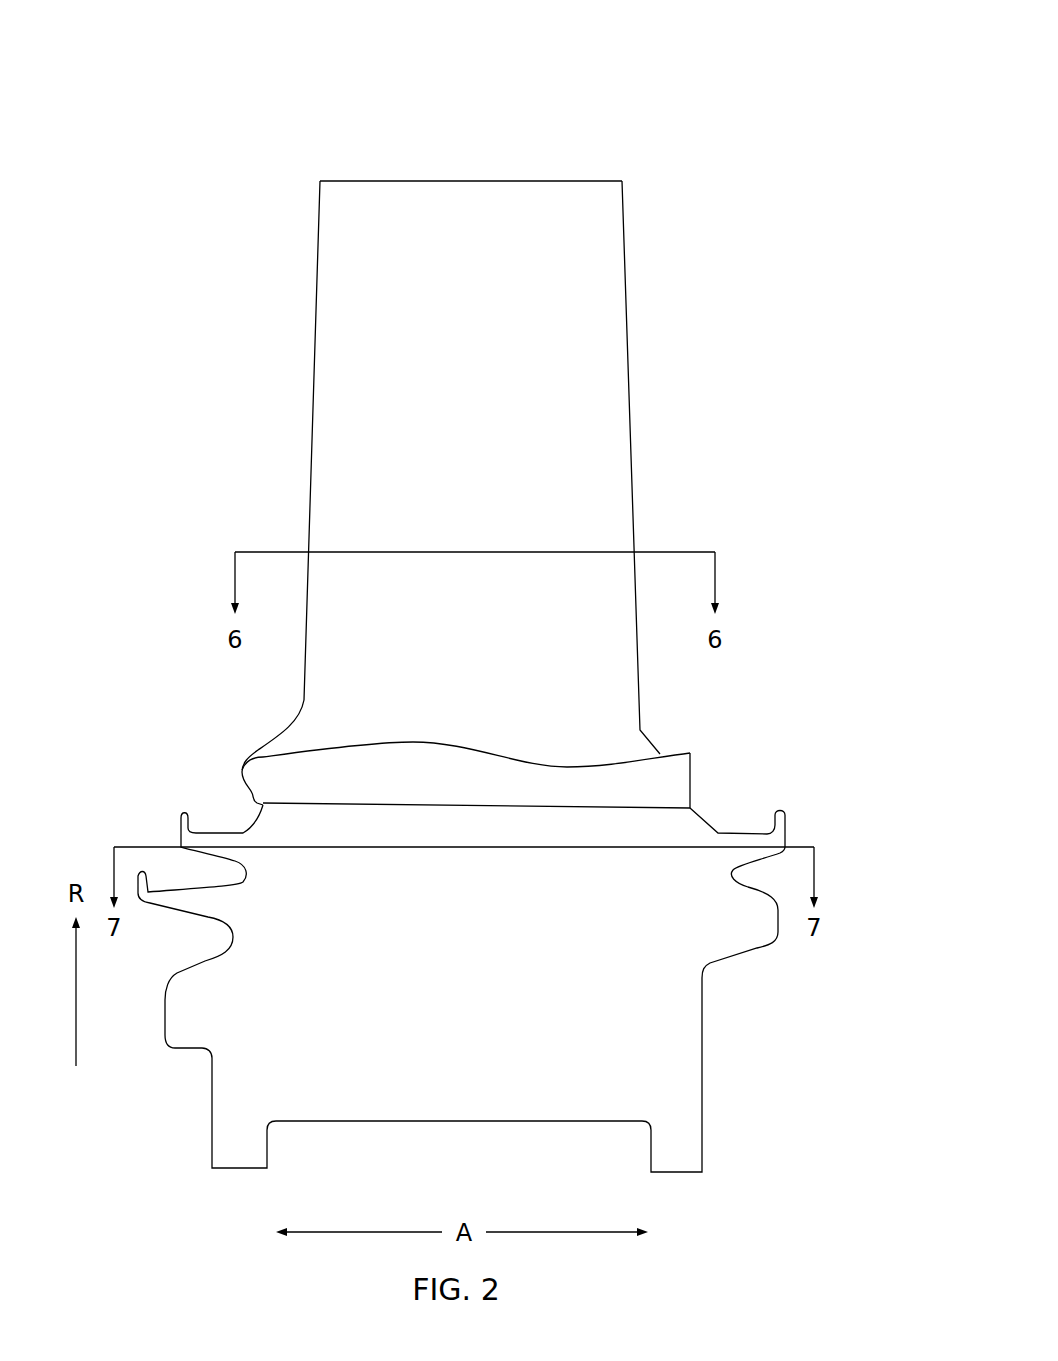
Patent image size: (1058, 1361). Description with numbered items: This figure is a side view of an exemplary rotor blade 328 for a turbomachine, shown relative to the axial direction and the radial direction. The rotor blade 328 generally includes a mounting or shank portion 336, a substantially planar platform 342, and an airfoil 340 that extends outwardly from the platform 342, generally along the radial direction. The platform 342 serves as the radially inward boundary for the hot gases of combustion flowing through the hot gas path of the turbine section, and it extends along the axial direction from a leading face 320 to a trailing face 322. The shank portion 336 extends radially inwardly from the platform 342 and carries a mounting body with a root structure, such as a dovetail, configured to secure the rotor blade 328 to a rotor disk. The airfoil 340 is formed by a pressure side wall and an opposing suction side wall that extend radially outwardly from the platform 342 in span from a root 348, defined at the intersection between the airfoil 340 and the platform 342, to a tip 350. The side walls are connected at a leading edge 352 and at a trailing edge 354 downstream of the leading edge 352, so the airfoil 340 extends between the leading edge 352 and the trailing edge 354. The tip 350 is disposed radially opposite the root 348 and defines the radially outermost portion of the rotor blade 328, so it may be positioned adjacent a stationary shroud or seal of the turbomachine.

The rotor blade 328 is at (108, 197).
The airfoil 340 is at (815, 754).
The tip 350 is at (600, 181).
The leading edge 352 is at (308, 513).
The trailing edge 354 is at (633, 498).
The platform 342 is at (653, 775).
The root 348 is at (450, 743).
The leading face 320 is at (236, 767).
The trailing face 322 is at (694, 782).
The shank portion 336 is at (817, 812).